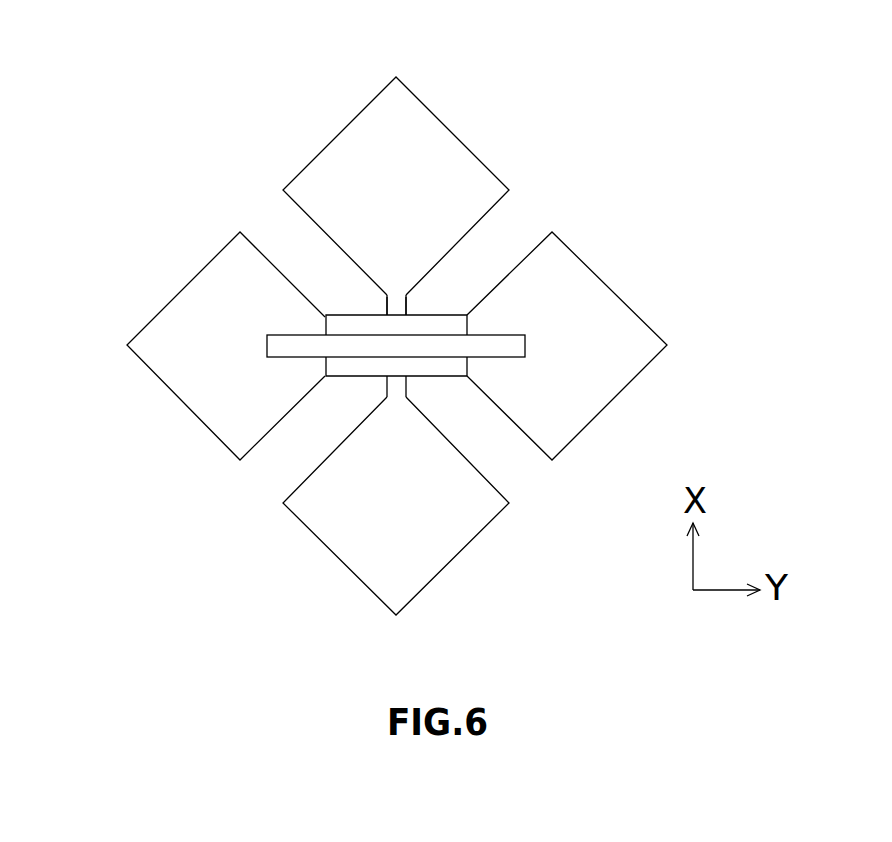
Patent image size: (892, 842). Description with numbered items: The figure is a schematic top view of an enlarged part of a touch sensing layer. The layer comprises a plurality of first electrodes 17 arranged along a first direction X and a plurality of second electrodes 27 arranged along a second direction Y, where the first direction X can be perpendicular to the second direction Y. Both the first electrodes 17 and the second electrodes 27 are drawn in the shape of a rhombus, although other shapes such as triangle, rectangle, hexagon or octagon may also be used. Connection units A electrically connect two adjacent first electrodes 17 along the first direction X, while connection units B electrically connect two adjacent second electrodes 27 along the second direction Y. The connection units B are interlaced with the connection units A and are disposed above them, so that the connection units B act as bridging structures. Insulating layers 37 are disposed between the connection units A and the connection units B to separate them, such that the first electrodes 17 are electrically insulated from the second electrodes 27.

The first electrodes 17 is at (441, 147).
The second electrodes 27 is at (197, 303).
The insulating layers 37 is at (348, 317).
The connection units A is at (395, 305).
The connection units B is at (282, 349).